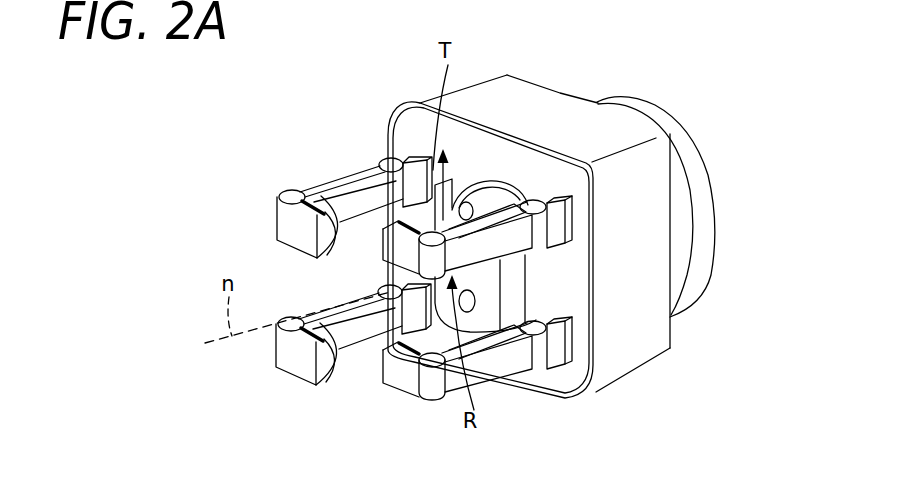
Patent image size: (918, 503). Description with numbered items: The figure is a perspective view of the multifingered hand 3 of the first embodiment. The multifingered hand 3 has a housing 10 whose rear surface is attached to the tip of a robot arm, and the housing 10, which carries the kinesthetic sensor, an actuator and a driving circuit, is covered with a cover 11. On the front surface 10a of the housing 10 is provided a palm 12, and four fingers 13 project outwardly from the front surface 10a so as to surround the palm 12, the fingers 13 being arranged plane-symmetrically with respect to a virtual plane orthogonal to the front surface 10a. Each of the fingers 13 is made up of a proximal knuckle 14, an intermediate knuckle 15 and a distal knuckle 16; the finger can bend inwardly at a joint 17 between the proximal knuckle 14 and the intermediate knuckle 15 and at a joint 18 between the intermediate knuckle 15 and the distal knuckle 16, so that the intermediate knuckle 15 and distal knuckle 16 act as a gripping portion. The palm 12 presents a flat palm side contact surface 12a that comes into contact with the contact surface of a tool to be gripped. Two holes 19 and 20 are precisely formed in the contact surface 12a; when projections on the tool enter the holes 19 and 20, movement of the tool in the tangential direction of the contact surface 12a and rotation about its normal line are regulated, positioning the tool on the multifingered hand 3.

The multifingered hand 3 is at (421, 86).
The housing 10 is at (708, 224).
The front surface 10a is at (567, 382).
The cover 11 is at (644, 347).
The palm 12 is at (490, 184).
The palm side contact surface 12a is at (462, 195).
The fingers 13 is at (392, 101).
The proximal knuckle 14 is at (396, 160).
The intermediate knuckle 15 is at (345, 198).
The distal knuckle 16 is at (323, 195).
The joint 17 is at (382, 176).
The joint 18 is at (290, 196).
The hole 19 is at (557, 182).
The hole 20 is at (449, 287).